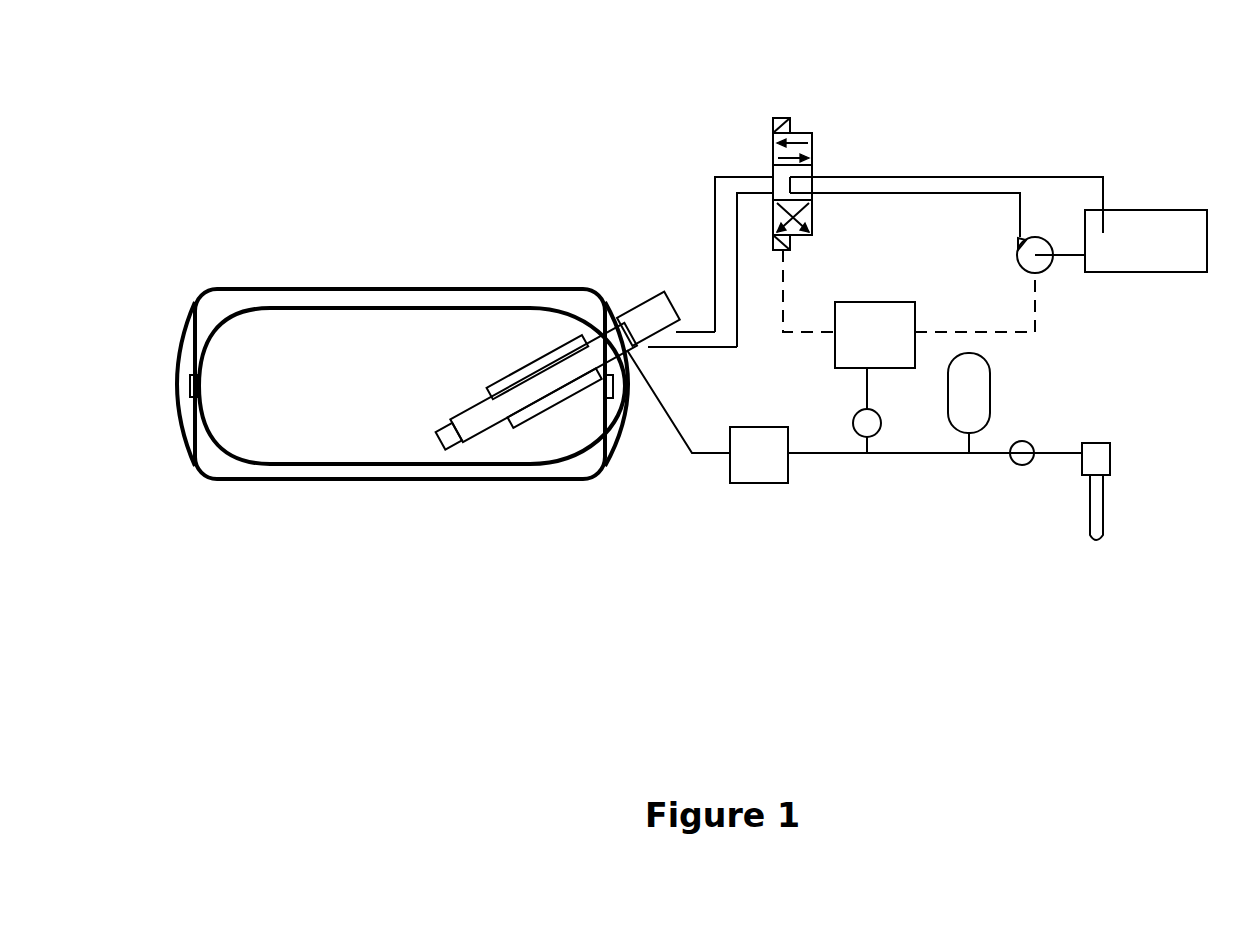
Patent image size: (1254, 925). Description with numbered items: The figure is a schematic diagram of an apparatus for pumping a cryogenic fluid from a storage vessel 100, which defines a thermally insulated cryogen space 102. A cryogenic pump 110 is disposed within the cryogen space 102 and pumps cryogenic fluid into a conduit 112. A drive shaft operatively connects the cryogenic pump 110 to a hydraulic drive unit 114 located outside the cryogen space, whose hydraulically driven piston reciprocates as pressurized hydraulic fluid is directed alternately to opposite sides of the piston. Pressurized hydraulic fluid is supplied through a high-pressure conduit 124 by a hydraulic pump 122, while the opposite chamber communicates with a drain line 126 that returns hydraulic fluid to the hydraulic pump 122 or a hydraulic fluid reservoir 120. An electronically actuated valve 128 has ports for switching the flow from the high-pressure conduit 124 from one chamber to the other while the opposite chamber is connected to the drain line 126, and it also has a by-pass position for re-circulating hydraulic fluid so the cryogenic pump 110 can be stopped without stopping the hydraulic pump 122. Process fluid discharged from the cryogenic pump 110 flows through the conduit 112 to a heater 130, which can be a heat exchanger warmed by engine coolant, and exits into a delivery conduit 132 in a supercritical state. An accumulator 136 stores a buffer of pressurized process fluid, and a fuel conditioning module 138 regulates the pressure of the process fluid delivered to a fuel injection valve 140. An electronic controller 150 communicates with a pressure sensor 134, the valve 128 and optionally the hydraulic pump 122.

The storage vessel 100 is at (343, 478).
The cryogen space 102 is at (393, 405).
The cryogenic pump 110 is at (480, 404).
The conduit 112 is at (704, 456).
The hydraulic drive unit 114 is at (653, 300).
The hydraulic fluid reservoir 120 is at (1117, 256).
The hydraulic pump 122 is at (1033, 262).
The high-pressure conduit 124 is at (870, 193).
The drain line 126 is at (1063, 177).
The valve 128 is at (785, 120).
The heater 130 is at (762, 465).
The delivery conduit 132 is at (803, 458).
The pressure sensor 134 is at (863, 428).
The accumulator 136 is at (975, 388).
The fuel conditioning module 138 is at (1022, 462).
The fuel injection valve 140 is at (1100, 463).
The electronic controller 150 is at (905, 352).